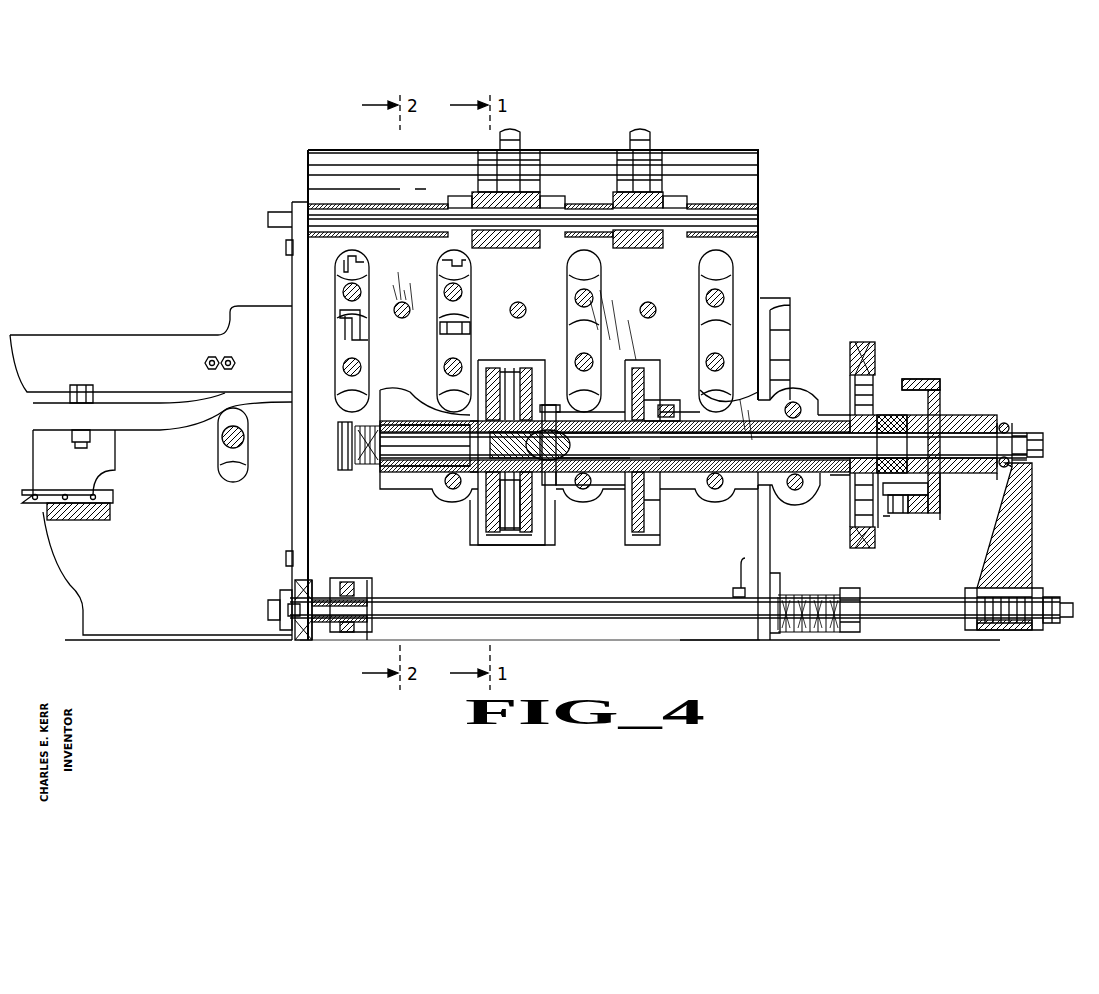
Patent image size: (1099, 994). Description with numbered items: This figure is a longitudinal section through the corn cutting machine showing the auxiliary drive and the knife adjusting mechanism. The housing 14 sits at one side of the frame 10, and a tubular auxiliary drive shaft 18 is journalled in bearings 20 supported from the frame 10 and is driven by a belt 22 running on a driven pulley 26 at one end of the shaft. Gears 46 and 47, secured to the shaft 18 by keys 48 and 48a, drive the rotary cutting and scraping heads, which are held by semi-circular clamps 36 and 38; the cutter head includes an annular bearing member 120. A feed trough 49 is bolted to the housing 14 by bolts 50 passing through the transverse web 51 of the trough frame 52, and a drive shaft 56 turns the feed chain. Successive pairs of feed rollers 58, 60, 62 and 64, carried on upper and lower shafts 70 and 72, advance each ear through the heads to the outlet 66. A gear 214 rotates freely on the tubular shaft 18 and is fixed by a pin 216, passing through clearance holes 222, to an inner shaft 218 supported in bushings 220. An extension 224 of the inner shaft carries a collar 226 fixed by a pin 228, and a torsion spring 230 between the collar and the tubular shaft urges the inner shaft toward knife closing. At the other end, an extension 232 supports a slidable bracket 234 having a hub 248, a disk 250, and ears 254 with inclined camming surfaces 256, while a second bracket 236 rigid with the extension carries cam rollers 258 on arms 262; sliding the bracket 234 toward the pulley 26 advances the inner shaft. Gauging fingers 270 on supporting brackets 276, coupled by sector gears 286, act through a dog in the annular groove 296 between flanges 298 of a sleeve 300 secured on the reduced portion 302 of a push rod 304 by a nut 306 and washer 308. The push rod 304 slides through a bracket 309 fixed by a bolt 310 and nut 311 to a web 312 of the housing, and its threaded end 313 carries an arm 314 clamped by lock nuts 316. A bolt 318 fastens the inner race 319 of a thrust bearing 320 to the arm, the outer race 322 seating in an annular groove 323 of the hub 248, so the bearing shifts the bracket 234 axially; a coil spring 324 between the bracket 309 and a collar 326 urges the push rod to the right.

The frame 10 is at (292, 272).
The housing 14 is at (710, 158).
The auxiliary drive shaft 18 is at (607, 421).
The bearings 20 is at (400, 421).
The belt 22 is at (862, 342).
The driven pulley 26 is at (860, 360).
The clamp 36 is at (513, 135).
The clamp 38 is at (640, 134).
The gear 46 is at (478, 515).
The gear 47 is at (648, 393).
The key 48 is at (490, 431).
The key 48a is at (632, 431).
The feed trough 49 is at (158, 333).
The bolts 50 is at (286, 247).
The transverse web 51 is at (292, 503).
The frame 52 is at (163, 618).
The drive shaft 56 is at (222, 446).
The feed rollers 58 is at (345, 288).
The feed rollers 60 is at (466, 271).
The feed rollers 62 is at (572, 290).
The feed rollers 64 is at (706, 316).
The outlet 66 is at (780, 300).
The upper shaft 70 is at (452, 293).
The lower shaft 72 is at (452, 367).
The annular bearing member 120 is at (511, 536).
The gear 214 is at (540, 515).
The pin 216 is at (560, 447).
The shaft 218 is at (752, 447).
The bushings 220 is at (848, 443).
The clearance holes 222 is at (562, 414).
The extension 224 is at (430, 447).
The collar 226 is at (338, 447).
The pin 228 is at (352, 468).
The torsion spring 230 is at (402, 469).
The extension 232 is at (970, 440).
The bracket 234 is at (935, 505).
The bracket 236 is at (920, 421).
The hub 248 is at (930, 420).
The disk 250 is at (928, 515).
The ears 254 is at (920, 390).
The camming surface 256 is at (905, 380).
The cam roller 258 is at (897, 514).
The arm 262 is at (878, 530).
The gauging fingers 270 is at (475, 330).
The supporting bracket 276 is at (370, 327).
The sector gears 286 is at (280, 220).
The annular groove 296 is at (353, 581).
The flanges 298 is at (380, 581).
The sleeve 300 is at (322, 632).
The reduced portion 302 is at (280, 605).
The push rod 304 is at (551, 628).
The nut 306 is at (285, 623).
The washer 308 is at (292, 599).
The bracket 309 is at (778, 633).
The bolt 310 is at (783, 590).
The nut 311 is at (738, 588).
The web 312 is at (748, 577).
The threaded end 313 is at (1050, 600).
The arm 314 is at (1020, 513).
The lock nuts 316 is at (1040, 590).
The bolt 318 is at (1045, 442).
The inner race 319 is at (1020, 458).
The anti-friction thrust bearing 320 is at (1008, 431).
The outer race 322 is at (1005, 424).
The annular groove 323 is at (948, 480).
The coil spring 324 is at (810, 633).
The collar 326 is at (858, 636).